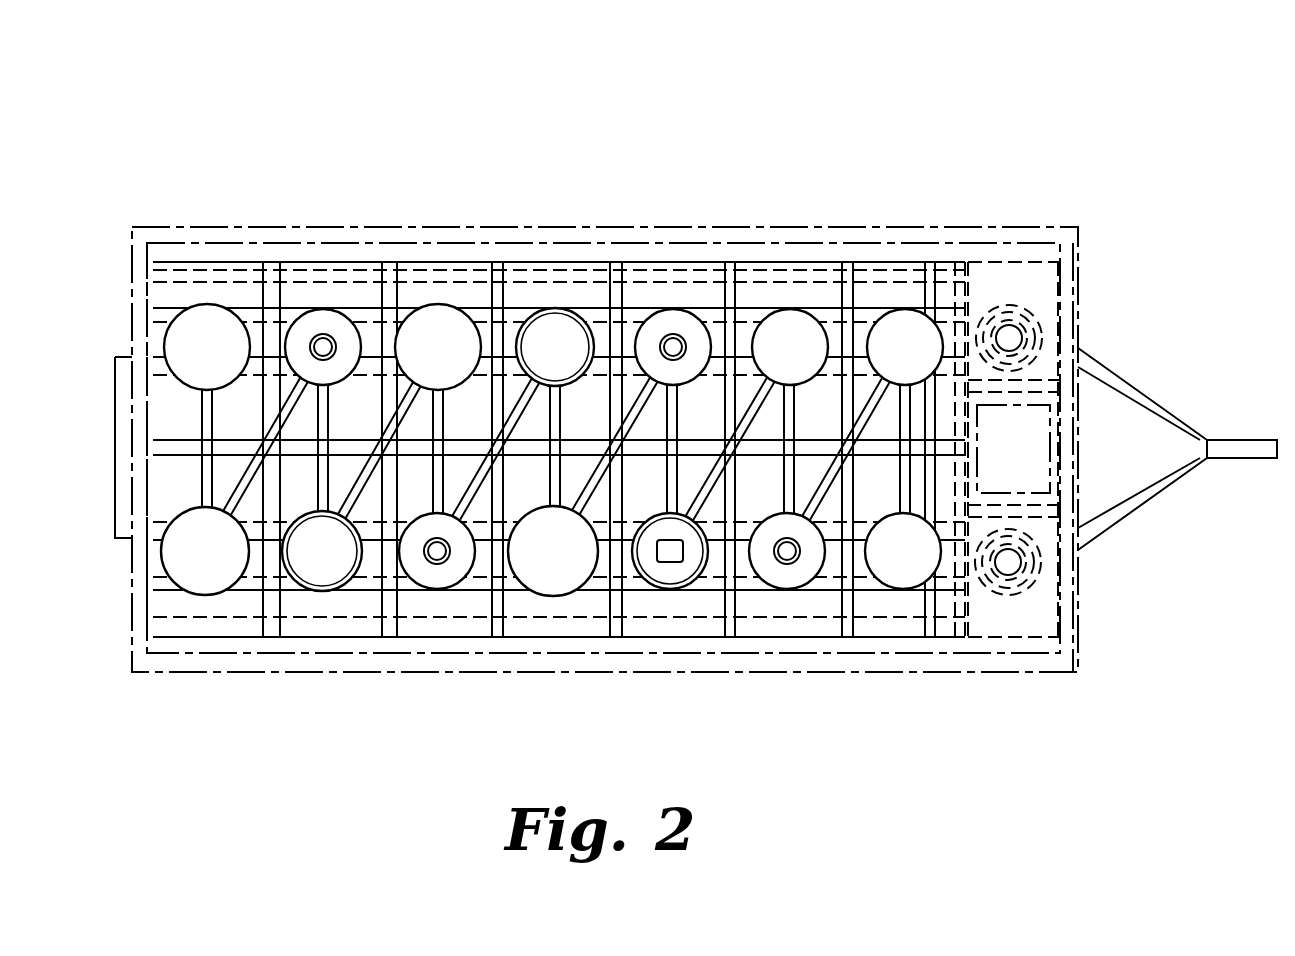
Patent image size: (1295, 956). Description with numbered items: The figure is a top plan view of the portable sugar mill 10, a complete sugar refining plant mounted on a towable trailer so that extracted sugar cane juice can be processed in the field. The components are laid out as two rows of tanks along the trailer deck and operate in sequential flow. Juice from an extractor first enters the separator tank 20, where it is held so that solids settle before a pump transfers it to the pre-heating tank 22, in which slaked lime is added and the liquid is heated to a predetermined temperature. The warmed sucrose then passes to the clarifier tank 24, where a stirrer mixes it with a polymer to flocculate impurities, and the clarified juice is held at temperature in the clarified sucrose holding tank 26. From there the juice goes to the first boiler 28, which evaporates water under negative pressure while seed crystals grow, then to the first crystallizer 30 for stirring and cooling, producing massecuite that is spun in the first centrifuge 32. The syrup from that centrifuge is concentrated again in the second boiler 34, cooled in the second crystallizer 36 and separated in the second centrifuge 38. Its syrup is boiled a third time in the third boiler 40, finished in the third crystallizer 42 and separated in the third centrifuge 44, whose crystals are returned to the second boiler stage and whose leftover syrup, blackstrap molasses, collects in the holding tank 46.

The portable sugar mill 10 is at (1190, 125).
The separator tank 20 is at (905, 580).
The pre-heating tank 22 is at (910, 320).
The clarifier tank 24 is at (775, 580).
The clarified sucrose holding tank 26 is at (795, 320).
The first boiler 28 is at (665, 575).
The first crystallizer 30 is at (675, 320).
The first centrifuge 32 is at (558, 585).
The second boiler 34 is at (562, 320).
The second crystallizer 36 is at (440, 580).
The second centrifuge 38 is at (440, 318).
The third boiler 40 is at (313, 572).
The third crystallizer 42 is at (320, 312).
The third centrifuge 44 is at (198, 582).
The holding tank 46 is at (200, 318).